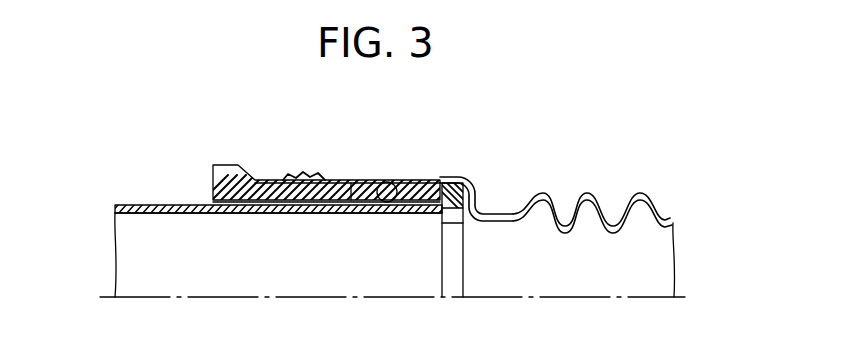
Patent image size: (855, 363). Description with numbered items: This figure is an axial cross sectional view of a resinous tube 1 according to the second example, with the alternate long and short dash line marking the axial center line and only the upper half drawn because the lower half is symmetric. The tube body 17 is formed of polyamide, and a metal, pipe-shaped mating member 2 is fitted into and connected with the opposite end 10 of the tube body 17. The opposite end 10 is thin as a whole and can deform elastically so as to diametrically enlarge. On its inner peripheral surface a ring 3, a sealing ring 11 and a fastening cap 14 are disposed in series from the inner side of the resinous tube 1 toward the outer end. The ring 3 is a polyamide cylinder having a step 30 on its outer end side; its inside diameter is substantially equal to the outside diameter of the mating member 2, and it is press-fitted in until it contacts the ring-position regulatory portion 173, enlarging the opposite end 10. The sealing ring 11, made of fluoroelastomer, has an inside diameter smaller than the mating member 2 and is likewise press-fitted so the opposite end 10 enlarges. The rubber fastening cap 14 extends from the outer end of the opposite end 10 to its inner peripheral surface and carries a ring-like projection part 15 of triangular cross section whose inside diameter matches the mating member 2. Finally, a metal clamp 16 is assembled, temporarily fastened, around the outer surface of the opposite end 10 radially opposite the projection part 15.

The resinous tube 1 is at (501, 134).
The mating member 2 is at (115, 205).
The ring 3 is at (470, 210).
The step 30 is at (438, 203).
The opposite end 10 is at (386, 178).
The sealing ring 11 is at (347, 213).
The fastening cap 14 is at (200, 213).
The projection part 15 is at (297, 213).
The clamp 16 is at (303, 177).
The tube body 17 is at (673, 216).
The ring-position regulatory portion 173 is at (484, 193).